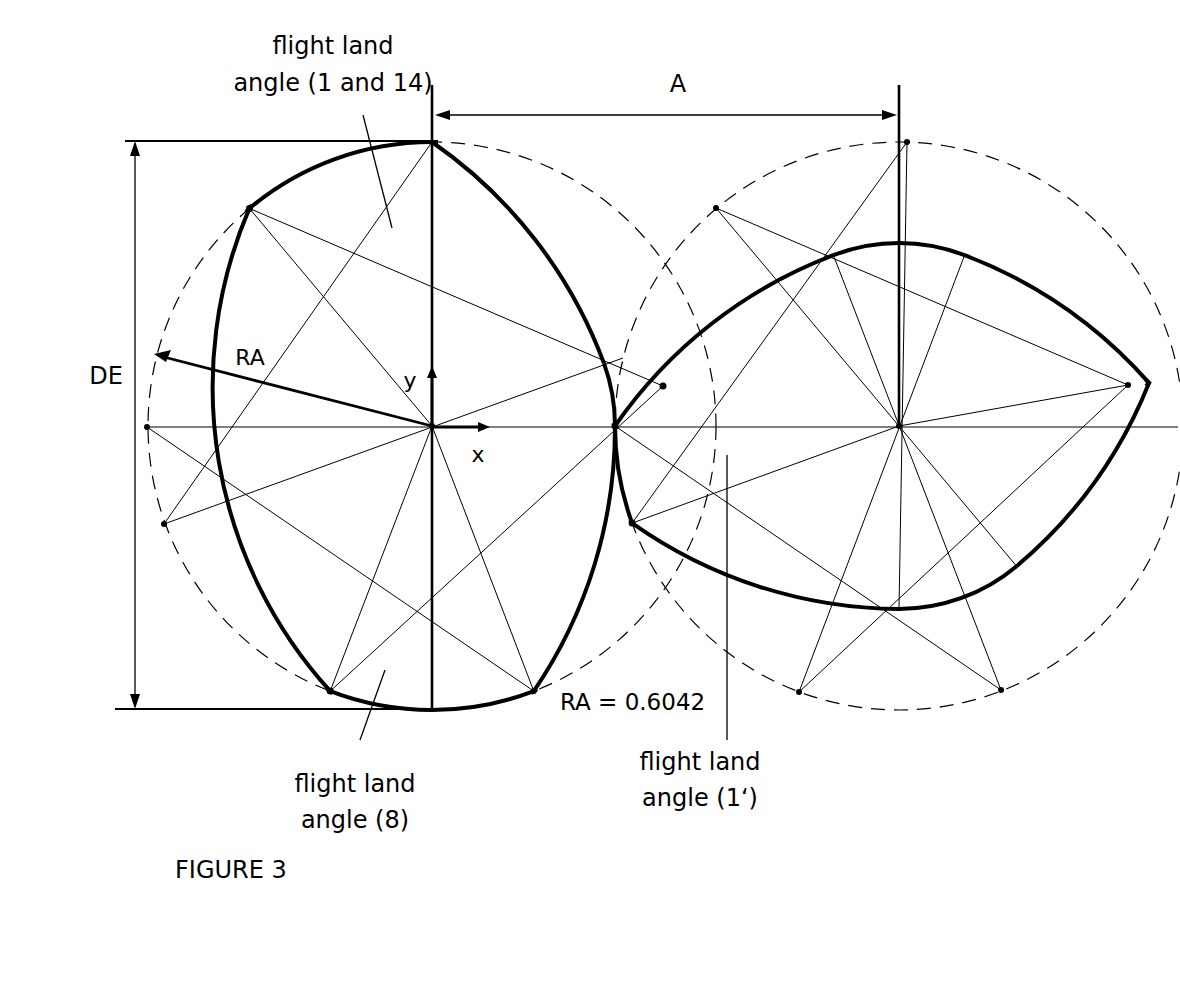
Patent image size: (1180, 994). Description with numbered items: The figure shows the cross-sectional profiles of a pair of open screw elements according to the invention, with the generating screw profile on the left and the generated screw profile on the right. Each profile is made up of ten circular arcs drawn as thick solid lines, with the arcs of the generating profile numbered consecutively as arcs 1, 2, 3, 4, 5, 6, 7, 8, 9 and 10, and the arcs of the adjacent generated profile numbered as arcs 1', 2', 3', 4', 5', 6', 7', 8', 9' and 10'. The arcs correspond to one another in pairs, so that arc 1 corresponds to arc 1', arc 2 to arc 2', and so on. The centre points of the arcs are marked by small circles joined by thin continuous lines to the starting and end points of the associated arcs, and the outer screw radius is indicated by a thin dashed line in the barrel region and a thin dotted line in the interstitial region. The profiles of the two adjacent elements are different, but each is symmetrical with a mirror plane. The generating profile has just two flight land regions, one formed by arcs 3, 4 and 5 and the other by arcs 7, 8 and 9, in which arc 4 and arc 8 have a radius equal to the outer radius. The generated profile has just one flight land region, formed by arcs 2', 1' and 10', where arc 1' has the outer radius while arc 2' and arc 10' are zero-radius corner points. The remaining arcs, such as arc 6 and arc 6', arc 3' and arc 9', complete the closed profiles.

The arc 1 is at (598, 394).
The arc 2 is at (518, 252).
The arc 3 is at (430, 160).
The arc 4 is at (340, 175).
The arc 5 is at (257, 221).
The arc 6 is at (272, 449).
The arc 7 is at (337, 678).
The arc 8 is at (432, 695).
The arc 9 is at (524, 677).
The arc 10 is at (574, 558).
The arc 1' is at (635, 474).
The arc 2' is at (645, 512).
The arc 3' is at (765, 566).
The arc 4' is at (958, 587).
The arc 5' is at (1083, 474).
The arc 6' is at (1133, 388).
The arc 7' is at (1057, 319).
The arc 8' is at (898, 260).
The arc 9' is at (724, 340).
The arc 10' is at (635, 432).